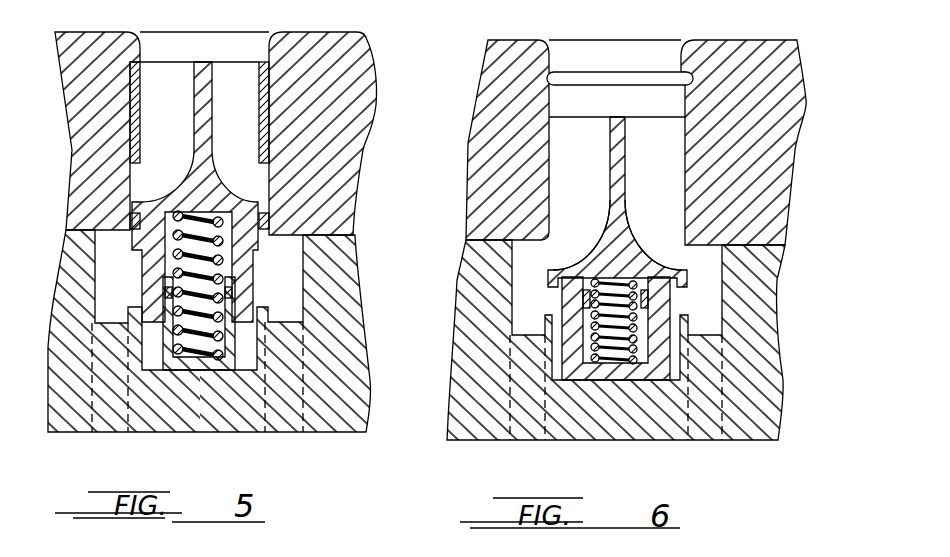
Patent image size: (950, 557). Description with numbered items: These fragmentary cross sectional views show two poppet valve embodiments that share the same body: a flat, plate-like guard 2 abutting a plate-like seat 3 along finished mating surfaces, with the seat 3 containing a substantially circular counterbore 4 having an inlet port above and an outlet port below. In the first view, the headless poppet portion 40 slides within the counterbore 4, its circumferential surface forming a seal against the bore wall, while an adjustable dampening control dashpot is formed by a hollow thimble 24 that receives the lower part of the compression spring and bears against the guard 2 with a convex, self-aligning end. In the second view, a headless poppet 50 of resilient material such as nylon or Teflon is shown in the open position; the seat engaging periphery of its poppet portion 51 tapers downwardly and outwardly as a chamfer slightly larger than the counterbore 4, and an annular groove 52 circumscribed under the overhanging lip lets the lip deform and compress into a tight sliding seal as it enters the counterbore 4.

In FIG. 5, the guard 2 is at (351, 324).
In FIG. 6, the guard 2 is at (778, 381).
In FIG. 5, the seat 3 is at (363, 112).
In FIG. 6, the seat 3 is at (788, 134).
In FIG. 6, the counterbore 4 is at (652, 53).
In FIG. 5, the thimble 24 is at (187, 372).
In FIG. 5, the headless poppet portion 40 is at (220, 83).
In FIG. 6, the headless poppet 50 is at (582, 137).
In FIG. 6, the poppet portion 51 is at (593, 252).
In FIG. 6, the annular groove 52 is at (552, 287).